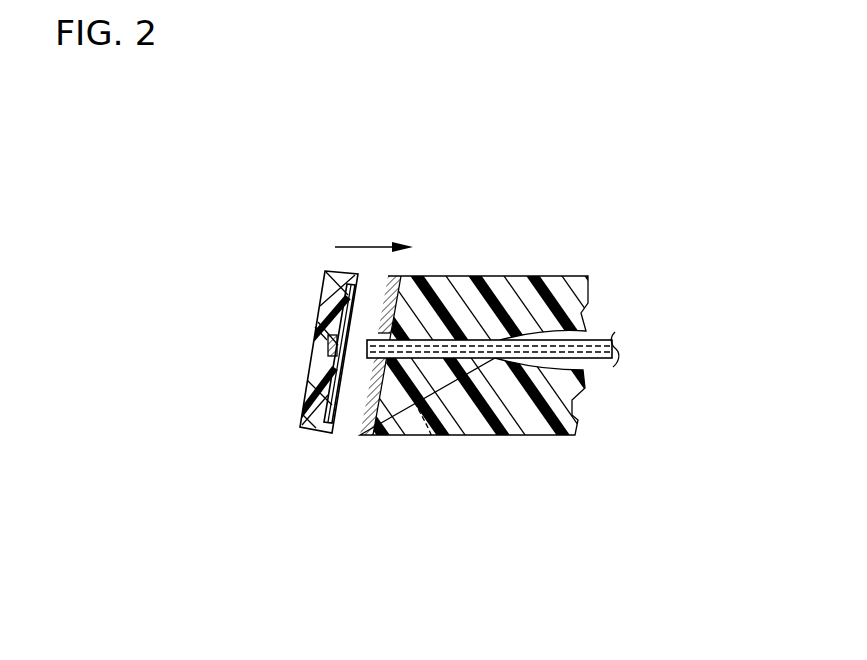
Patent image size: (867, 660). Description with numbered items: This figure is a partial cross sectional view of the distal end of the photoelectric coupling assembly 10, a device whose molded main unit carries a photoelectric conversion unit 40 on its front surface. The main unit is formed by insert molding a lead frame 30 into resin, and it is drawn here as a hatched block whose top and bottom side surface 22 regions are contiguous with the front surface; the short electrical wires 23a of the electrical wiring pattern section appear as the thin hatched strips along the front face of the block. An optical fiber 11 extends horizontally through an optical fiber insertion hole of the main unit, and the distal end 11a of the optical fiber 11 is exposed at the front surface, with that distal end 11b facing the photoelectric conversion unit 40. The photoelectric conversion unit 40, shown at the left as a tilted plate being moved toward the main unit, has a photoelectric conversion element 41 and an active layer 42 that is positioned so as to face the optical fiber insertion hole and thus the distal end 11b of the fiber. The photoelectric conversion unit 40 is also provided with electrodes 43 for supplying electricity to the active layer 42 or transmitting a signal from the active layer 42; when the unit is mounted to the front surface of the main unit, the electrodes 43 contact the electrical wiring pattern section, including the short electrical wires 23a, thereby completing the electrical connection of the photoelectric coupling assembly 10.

The photoelectric coupling assembly 10 is at (478, 220).
The optical fiber 11 is at (595, 360).
The distal end of optical fiber 11a is at (432, 437).
The distal end of optical fiber 11b is at (315, 327).
The side surface 22 is at (573, 290).
The short electrical wire 23a is at (362, 434).
The lead frame 30 is at (383, 458).
The photoelectric conversion unit 40 is at (296, 444).
The photoelectric conversion element 41 is at (318, 316).
The active layer 42 is at (328, 345).
The electrode 43 is at (323, 272).